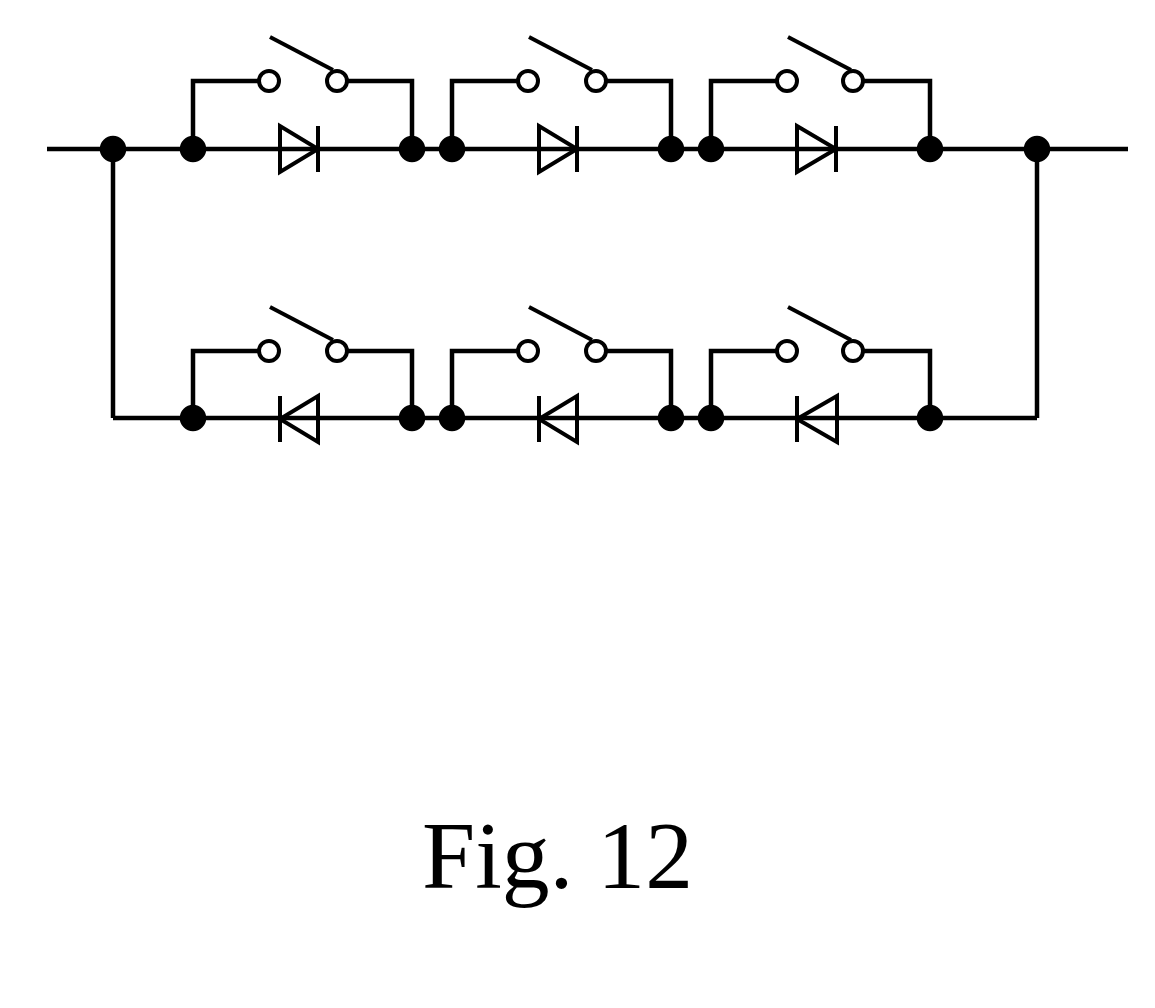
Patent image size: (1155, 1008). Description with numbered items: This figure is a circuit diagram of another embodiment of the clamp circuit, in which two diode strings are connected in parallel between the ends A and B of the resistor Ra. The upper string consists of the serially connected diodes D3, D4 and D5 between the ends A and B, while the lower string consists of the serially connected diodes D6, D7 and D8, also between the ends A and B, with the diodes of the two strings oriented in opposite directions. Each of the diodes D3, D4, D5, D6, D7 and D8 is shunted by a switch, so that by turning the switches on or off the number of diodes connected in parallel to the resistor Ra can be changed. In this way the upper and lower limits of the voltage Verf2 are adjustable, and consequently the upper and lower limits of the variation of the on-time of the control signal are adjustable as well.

The end of the resistor A is at (113, 114).
The end of the resistor B is at (1033, 108).
The diode D3 is at (302, 144).
The diode D4 is at (561, 144).
The diode D5 is at (820, 144).
The diode D6 is at (302, 414).
The diode D7 is at (561, 414).
The diode D8 is at (820, 414).